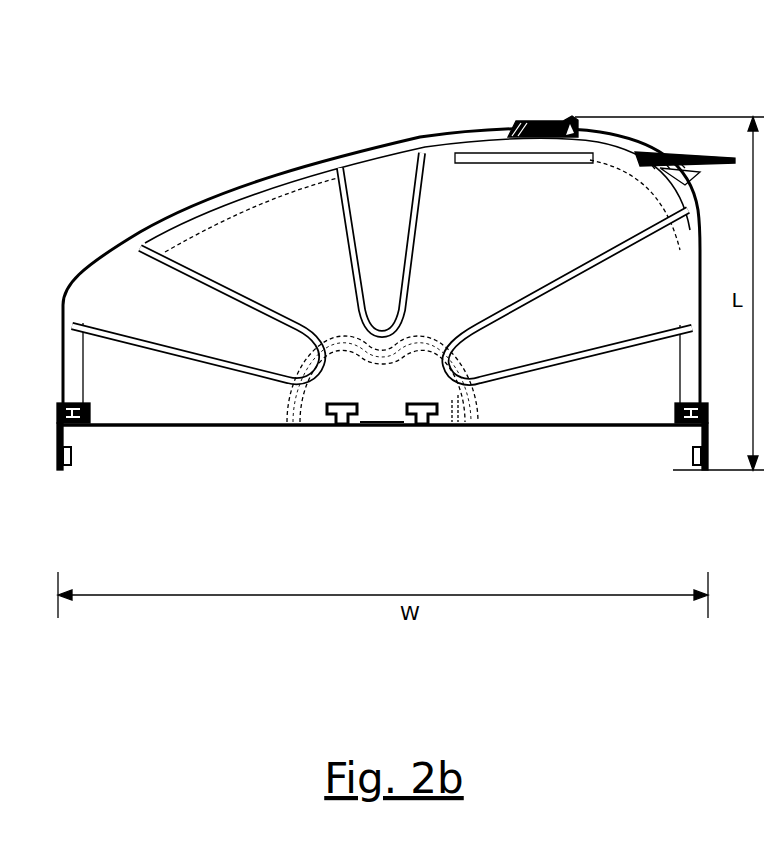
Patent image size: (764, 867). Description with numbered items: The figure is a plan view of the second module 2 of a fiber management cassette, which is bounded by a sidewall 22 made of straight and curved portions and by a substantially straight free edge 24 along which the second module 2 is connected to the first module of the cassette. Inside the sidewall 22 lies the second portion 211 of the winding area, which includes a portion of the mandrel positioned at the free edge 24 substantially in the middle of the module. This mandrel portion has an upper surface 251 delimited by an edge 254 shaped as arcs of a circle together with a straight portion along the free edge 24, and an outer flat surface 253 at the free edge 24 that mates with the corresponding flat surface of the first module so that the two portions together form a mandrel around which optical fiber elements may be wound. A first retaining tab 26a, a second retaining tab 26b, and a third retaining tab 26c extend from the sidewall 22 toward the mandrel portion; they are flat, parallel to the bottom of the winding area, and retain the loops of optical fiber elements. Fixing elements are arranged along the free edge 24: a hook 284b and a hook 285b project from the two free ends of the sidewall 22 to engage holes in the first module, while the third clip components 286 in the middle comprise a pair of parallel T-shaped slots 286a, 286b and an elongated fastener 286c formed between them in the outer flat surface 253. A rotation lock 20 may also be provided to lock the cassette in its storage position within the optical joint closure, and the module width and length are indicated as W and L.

The second module 2 is at (243, 132).
The rotation lock 20 is at (547, 111).
The sidewall 22 is at (133, 247).
The second portion of the winding area 211 is at (236, 288).
The first retaining tab 26a is at (197, 314).
The second retaining tab 26b is at (568, 296).
The third retaining tab 26c is at (381, 243).
The upper surface 251 is at (382, 386).
The outer flat surface 253 is at (459, 427).
The edge 254 is at (425, 334).
The free edge 24 is at (228, 427).
The third clip components 286 is at (404, 508).
The elongated slot 286a is at (333, 427).
The elongated slot 286b is at (422, 427).
The elongated fastener 286c is at (377, 427).
The hook 284b is at (68, 470).
The hook 285b is at (702, 470).